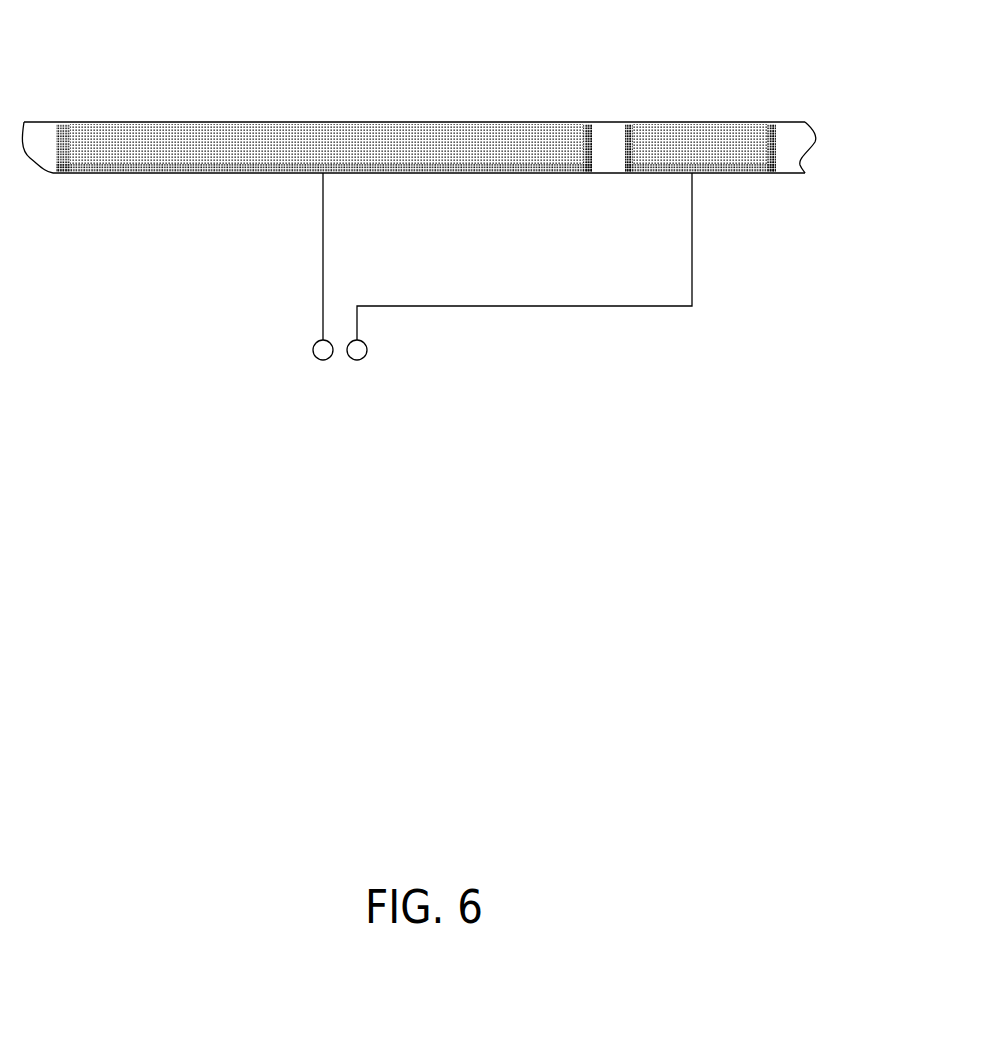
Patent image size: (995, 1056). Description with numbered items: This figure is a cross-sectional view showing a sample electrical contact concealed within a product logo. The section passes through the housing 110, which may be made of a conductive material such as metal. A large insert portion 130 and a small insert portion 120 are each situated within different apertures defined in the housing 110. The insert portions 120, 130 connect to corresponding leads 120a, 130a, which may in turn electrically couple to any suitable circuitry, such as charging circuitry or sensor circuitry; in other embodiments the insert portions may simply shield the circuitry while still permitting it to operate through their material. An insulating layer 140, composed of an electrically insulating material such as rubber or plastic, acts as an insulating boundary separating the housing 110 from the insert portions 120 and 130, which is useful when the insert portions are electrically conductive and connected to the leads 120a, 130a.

The housing 110 is at (24, 122).
The small insert portion 120 is at (242, 122).
The large insert portion 130 is at (695, 122).
The insulating layer 140 is at (590, 122).
The lead 130a is at (313, 353).
The lead 120a is at (357, 360).